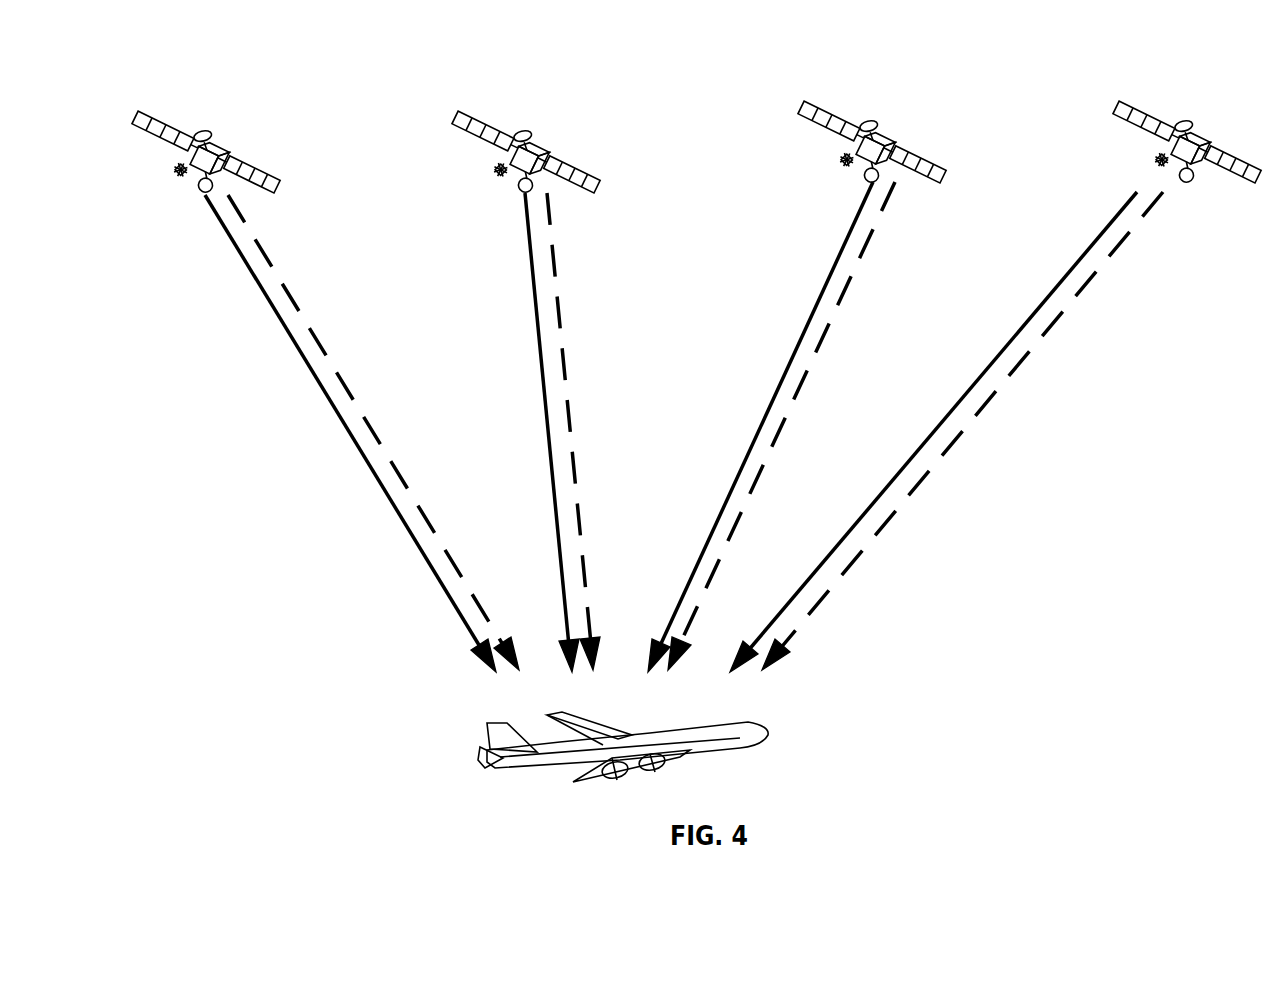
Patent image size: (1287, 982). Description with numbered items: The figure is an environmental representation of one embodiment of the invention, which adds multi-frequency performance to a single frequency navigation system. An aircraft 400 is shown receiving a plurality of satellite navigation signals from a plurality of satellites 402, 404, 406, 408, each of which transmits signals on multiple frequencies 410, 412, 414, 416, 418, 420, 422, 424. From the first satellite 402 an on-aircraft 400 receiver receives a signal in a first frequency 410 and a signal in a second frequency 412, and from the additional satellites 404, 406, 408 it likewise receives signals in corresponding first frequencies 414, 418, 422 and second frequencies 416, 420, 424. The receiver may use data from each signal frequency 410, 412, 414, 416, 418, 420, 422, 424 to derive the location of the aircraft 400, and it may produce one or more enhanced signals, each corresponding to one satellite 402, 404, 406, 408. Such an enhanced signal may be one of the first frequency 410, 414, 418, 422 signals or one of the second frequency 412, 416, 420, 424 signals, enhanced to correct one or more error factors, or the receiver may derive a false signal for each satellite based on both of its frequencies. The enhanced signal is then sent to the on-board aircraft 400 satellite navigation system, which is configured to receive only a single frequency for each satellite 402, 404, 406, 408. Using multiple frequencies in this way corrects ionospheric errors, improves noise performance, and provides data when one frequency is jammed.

The aircraft 400 is at (720, 726).
The first satellite 402 is at (226, 148).
The satellite 404 is at (545, 146).
The satellite 406 is at (889, 136).
The satellite 408 is at (1208, 132).
The first frequency 410 is at (318, 348).
The second frequency 412 is at (383, 500).
The first frequency 414 is at (560, 312).
The second frequency 416 is at (541, 352).
The first frequency 418 is at (846, 284).
The second frequency 420 is at (787, 370).
The first frequency 422 is at (1076, 298).
The second frequency 424 is at (1066, 252).